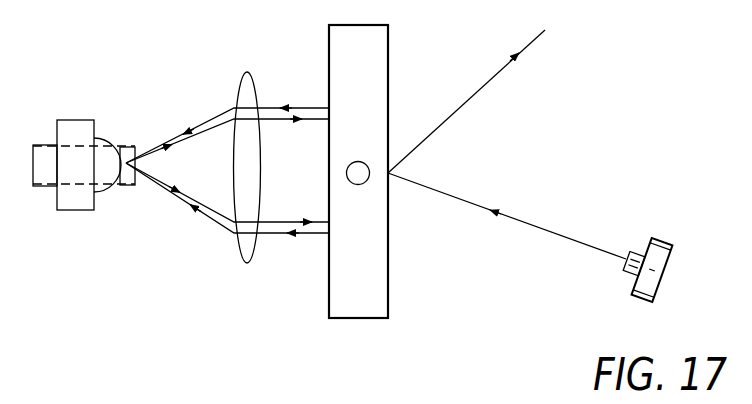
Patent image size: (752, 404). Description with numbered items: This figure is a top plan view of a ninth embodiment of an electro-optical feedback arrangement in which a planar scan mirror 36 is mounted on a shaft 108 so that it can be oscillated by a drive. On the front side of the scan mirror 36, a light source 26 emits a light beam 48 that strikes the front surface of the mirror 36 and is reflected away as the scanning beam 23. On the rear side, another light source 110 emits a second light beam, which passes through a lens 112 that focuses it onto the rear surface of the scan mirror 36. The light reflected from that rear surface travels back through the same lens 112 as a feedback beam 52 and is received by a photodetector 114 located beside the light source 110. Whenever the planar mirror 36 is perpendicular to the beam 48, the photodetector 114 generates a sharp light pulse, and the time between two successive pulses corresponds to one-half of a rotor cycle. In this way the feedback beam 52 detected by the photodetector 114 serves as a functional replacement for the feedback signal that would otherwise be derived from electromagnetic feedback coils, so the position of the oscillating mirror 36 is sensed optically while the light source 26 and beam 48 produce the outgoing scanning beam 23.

The scanning beam 23 is at (492, 79).
The light source 26 is at (675, 258).
The scan mirror 36 is at (382, 285).
The light beam 48 is at (567, 235).
The feedback beam 52 is at (163, 137).
The shaft 108 is at (360, 162).
The light source 110 is at (37, 183).
The lens 112 is at (250, 250).
The photodetector 114 is at (90, 210).